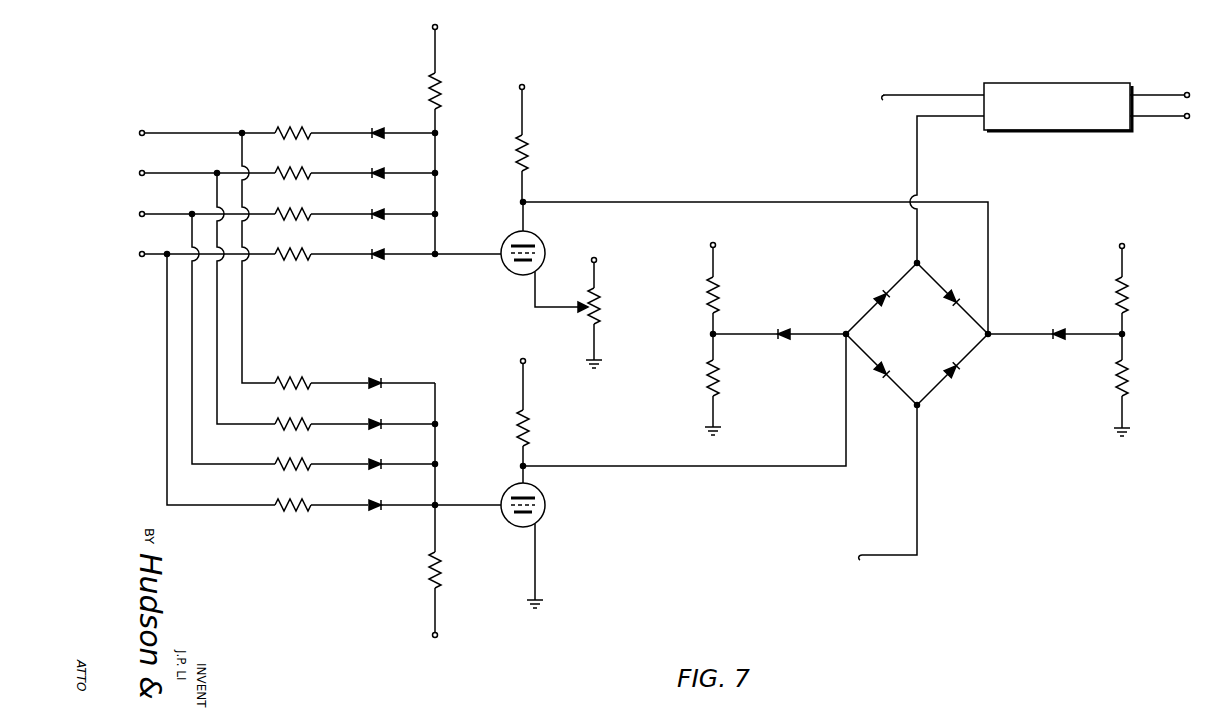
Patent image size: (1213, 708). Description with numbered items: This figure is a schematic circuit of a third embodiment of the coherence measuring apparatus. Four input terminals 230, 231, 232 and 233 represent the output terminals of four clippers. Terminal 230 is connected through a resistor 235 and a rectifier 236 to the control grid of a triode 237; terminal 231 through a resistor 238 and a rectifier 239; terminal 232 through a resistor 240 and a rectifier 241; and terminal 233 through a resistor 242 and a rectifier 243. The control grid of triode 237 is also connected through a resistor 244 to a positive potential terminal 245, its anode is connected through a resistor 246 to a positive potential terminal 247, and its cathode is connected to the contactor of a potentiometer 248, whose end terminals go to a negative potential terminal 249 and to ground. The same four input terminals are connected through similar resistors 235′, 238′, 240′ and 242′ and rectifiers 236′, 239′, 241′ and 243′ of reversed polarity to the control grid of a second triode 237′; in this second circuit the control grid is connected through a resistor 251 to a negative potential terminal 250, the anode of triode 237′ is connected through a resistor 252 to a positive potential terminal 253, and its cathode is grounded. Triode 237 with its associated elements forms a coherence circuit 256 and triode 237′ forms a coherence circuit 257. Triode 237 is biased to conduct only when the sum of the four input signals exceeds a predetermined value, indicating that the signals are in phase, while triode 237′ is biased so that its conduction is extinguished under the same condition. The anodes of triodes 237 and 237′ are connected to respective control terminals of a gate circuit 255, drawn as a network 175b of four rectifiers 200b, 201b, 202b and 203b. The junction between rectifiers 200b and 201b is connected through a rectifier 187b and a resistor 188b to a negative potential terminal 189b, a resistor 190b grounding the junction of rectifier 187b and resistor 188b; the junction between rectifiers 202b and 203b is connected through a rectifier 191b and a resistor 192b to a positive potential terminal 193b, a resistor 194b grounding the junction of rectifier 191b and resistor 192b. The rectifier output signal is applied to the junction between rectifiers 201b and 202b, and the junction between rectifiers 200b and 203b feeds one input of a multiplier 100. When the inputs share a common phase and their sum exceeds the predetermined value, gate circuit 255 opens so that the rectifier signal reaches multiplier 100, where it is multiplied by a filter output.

The multiplier 100 is at (1057, 82).
The rectifier network 175b is at (942, 344).
The rectifier 187b is at (784, 325).
The resistor 188b is at (717, 290).
The negative potential terminal 189b is at (716, 244).
The resistor 190b is at (717, 378).
The rectifier 191b is at (1060, 325).
The resistor 192b is at (1126, 290).
The positive potential terminal 193b is at (1124, 244).
The resistor 194b is at (1126, 378).
The rectifier 200b is at (878, 296).
The rectifier 201b is at (878, 374).
The rectifier 202b is at (957, 370).
The rectifier 203b is at (972, 268).
The input terminal 230 is at (141, 130).
The input terminal 231 is at (141, 170).
The input terminal 232 is at (141, 211).
The input terminal 233 is at (141, 251).
The resistor 235 is at (296, 127).
The rectifier 236 is at (378, 127).
The triode 237 is at (510, 236).
The resistor 238 is at (293, 167).
The rectifier 239 is at (378, 167).
The resistor 240 is at (293, 208).
The rectifier 241 is at (378, 208).
The resistor 242 is at (293, 248).
The rectifier 243 is at (378, 248).
The resistor 235′ is at (294, 378).
The rectifier 236′ is at (374, 378).
The triode 237′ is at (511, 489).
The resistor 238′ is at (291, 419).
The rectifier 239′ is at (373, 419).
The resistor 240′ is at (290, 459).
The rectifier 241′ is at (372, 459).
The resistor 242′ is at (289, 500).
The rectifier 243′ is at (372, 500).
The resistor 244 is at (437, 88).
The positive potential terminal 245 is at (432, 28).
The resistor 246 is at (526, 150).
The positive potential terminal 247 is at (524, 86).
The potentiometer 248 is at (600, 306).
The negative potential terminal 249 is at (596, 259).
The negative potential terminal 250 is at (432, 636).
The resistor 251 is at (430, 573).
The resistor 252 is at (528, 424).
The positive potential terminal 253 is at (522, 360).
The gate circuit 255 is at (1000, 247).
The coherence circuit 256 is at (486, 288).
The coherence circuit 257 is at (561, 549).